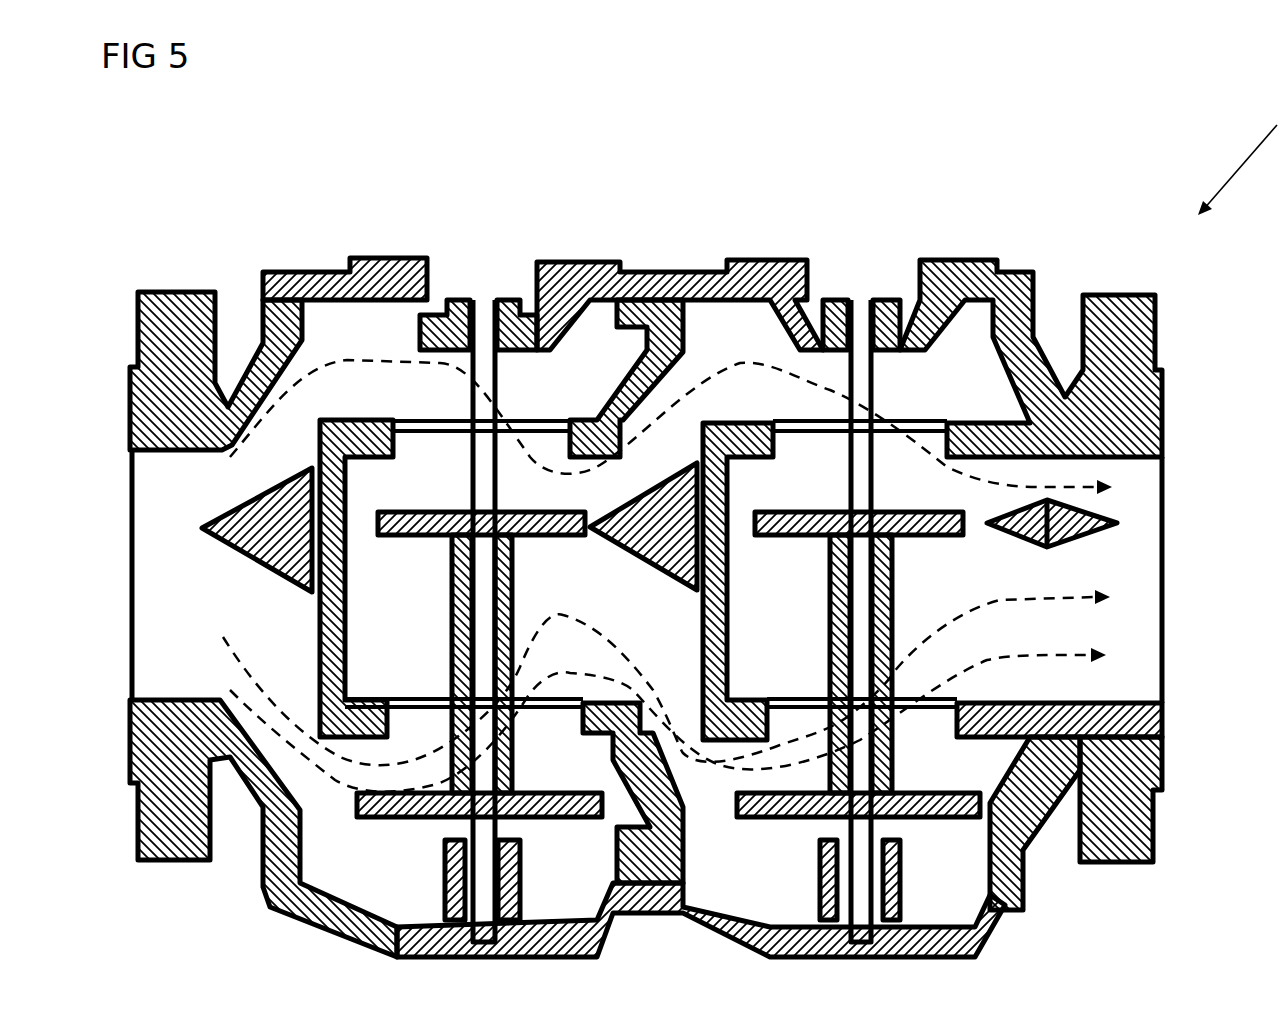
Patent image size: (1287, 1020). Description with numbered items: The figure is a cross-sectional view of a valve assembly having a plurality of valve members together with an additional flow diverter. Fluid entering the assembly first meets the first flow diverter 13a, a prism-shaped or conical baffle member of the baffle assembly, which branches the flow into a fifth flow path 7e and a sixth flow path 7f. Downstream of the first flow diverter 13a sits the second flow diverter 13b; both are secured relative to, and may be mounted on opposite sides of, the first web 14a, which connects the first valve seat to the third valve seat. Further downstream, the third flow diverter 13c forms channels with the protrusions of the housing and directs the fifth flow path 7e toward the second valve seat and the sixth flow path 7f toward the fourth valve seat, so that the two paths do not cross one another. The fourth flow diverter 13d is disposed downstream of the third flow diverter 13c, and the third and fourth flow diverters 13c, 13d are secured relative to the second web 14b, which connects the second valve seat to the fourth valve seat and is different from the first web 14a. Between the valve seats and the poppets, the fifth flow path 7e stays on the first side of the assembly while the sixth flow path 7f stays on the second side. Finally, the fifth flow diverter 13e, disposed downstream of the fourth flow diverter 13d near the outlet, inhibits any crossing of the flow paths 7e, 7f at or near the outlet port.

The fifth flow path 7e is at (650, 427).
The sixth flow path 7f is at (646, 691).
The first flow diverter 13a is at (247, 530).
The second flow diverter 13b is at (359, 578).
The third flow diverter 13c is at (642, 526).
The fourth flow diverter 13d is at (741, 581).
The fifth flow diverter 13e is at (1057, 537).
The first web 14a is at (473, 619).
The second web 14b is at (856, 619).